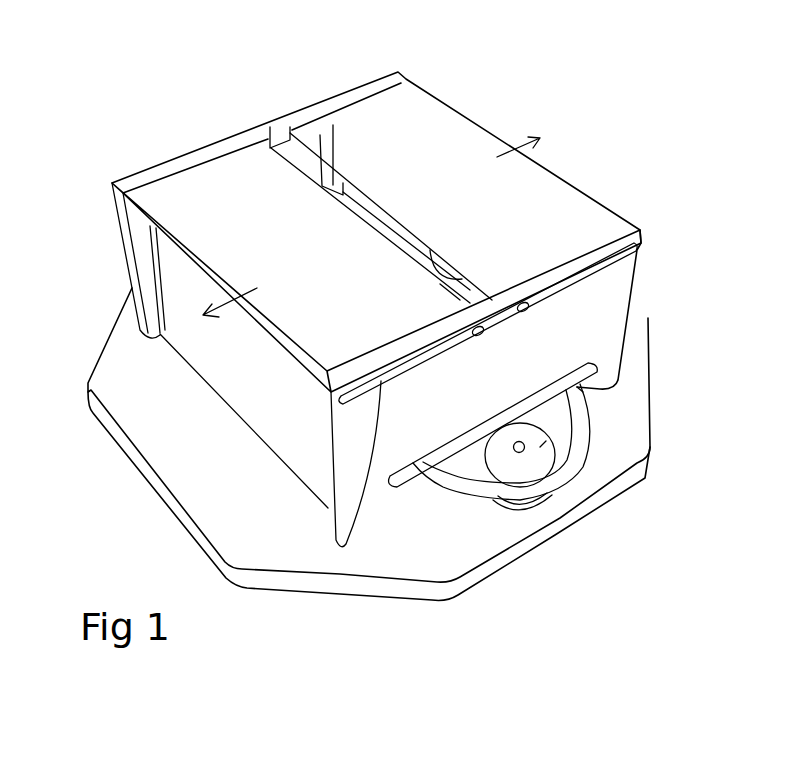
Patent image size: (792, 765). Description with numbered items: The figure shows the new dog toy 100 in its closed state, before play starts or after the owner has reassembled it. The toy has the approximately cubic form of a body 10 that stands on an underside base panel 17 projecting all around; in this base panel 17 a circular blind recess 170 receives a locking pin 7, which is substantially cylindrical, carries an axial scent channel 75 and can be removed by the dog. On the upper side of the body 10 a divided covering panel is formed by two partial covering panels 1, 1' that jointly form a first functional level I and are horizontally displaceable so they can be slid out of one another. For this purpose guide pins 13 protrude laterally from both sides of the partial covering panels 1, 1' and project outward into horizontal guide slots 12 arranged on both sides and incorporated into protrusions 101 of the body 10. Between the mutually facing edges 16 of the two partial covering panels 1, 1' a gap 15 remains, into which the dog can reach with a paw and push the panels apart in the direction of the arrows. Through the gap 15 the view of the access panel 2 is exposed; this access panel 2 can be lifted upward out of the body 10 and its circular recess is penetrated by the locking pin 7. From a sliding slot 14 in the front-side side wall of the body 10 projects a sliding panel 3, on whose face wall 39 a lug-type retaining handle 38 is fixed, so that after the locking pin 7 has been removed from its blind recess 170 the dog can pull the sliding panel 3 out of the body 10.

The dog toy 100 is at (136, 81).
The partial covering panel 1 is at (376, 231).
The partial covering panel 1' is at (441, 177).
The first functional level I is at (410, 120).
The access panel 2 is at (398, 233).
The sliding panel 3 is at (592, 366).
The locking pin 7 is at (462, 268).
The body 10 is at (178, 300).
The guide slot 12 is at (600, 262).
The guide pin 13 is at (529, 306).
The sliding slot 14 is at (397, 395).
The gap 15 is at (328, 140).
The edge 16 is at (270, 147).
The base panel 17 is at (640, 372).
The retaining handle 38 is at (478, 490).
The face wall 39 is at (577, 387).
The scent channel 75 is at (540, 447).
The protrusion 101 is at (281, 133).
The blind recess 170 is at (512, 512).